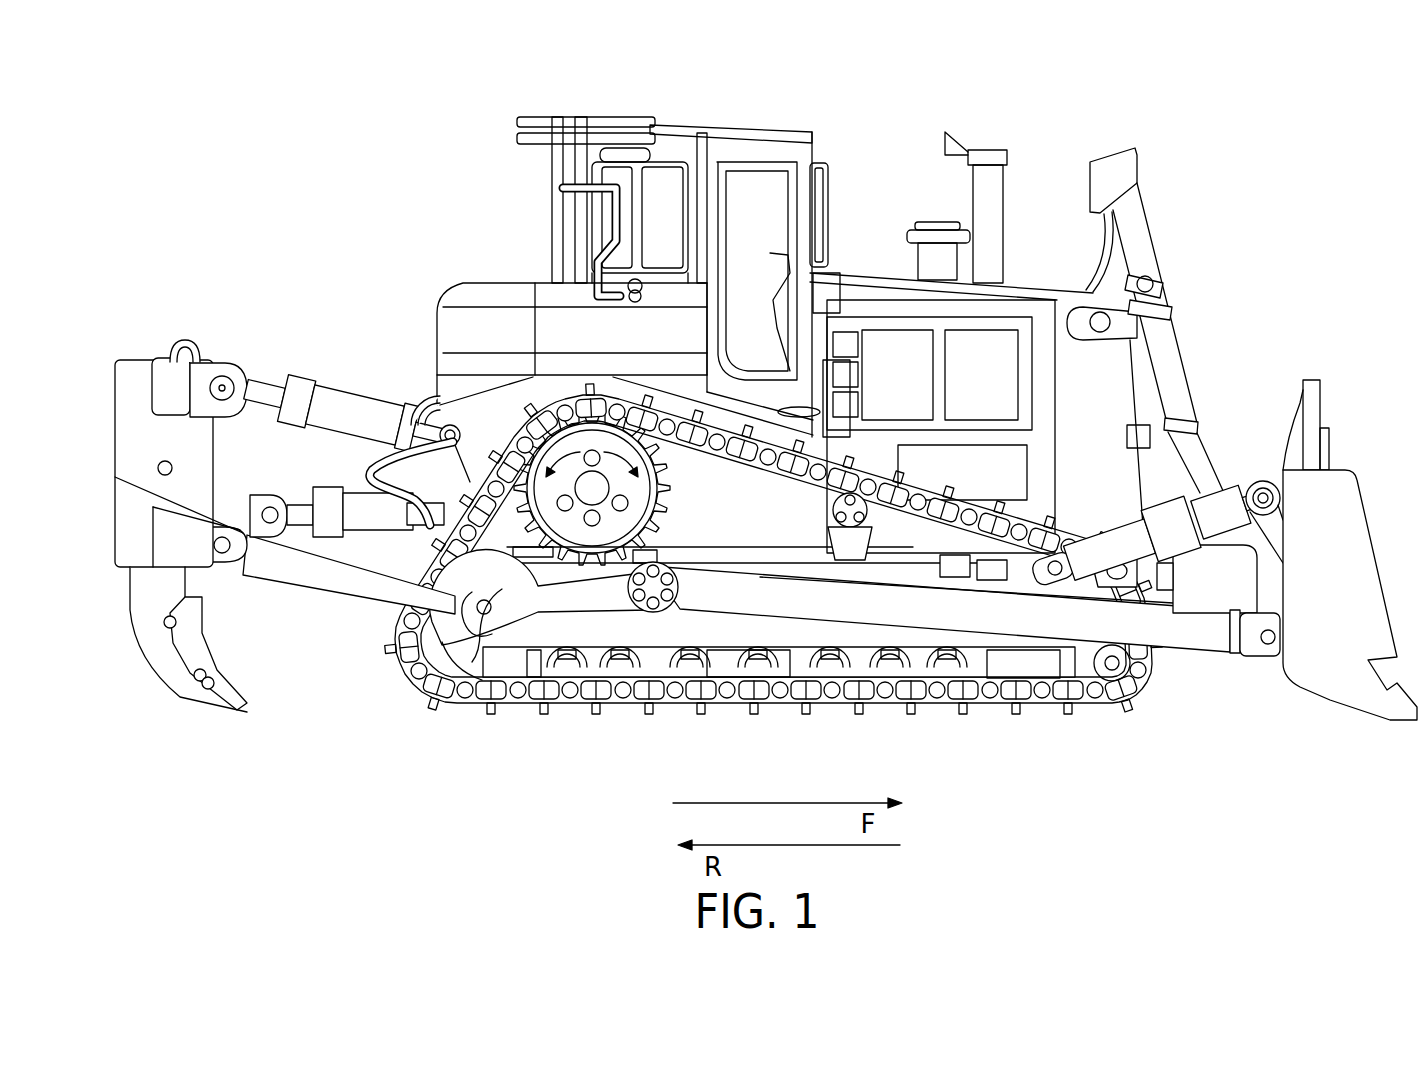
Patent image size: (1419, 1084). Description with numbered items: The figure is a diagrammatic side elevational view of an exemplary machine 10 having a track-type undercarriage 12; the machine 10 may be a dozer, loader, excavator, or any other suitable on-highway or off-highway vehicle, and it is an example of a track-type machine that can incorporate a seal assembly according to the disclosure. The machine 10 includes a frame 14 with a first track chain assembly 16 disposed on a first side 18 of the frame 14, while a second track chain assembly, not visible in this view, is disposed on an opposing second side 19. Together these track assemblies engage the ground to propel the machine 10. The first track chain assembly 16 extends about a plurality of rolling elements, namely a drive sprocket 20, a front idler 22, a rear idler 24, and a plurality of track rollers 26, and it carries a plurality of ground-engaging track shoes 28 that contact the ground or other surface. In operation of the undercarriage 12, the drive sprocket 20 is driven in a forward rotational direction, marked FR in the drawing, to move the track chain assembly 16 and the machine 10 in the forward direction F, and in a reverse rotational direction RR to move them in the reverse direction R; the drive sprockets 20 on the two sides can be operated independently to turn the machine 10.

The machine 10 is at (766, 424).
The track-type undercarriage 12 is at (410, 695).
The frame 14 is at (1120, 483).
The first track chain assembly 16 is at (652, 720).
The first side 18 is at (482, 322).
The second side 19 is at (503, 272).
The drive sprocket 20 is at (650, 486).
The front idler 22 is at (1085, 693).
The rear idler 24 is at (470, 685).
The track rollers 26 is at (710, 707).
The ground-engaging track shoes 28 is at (967, 713).